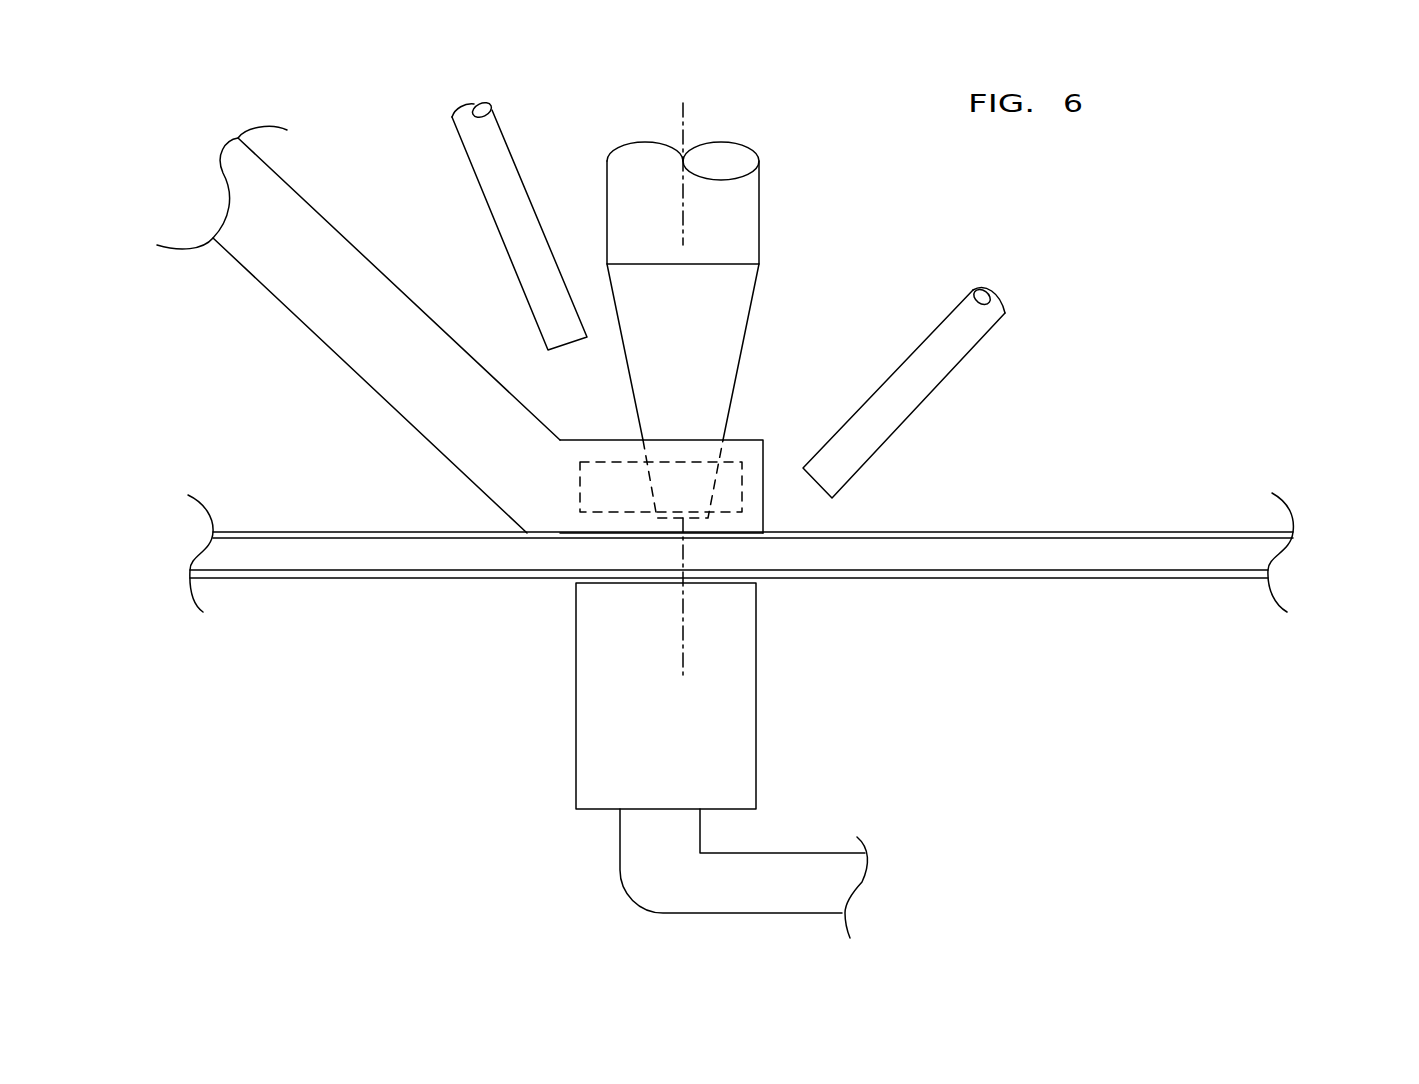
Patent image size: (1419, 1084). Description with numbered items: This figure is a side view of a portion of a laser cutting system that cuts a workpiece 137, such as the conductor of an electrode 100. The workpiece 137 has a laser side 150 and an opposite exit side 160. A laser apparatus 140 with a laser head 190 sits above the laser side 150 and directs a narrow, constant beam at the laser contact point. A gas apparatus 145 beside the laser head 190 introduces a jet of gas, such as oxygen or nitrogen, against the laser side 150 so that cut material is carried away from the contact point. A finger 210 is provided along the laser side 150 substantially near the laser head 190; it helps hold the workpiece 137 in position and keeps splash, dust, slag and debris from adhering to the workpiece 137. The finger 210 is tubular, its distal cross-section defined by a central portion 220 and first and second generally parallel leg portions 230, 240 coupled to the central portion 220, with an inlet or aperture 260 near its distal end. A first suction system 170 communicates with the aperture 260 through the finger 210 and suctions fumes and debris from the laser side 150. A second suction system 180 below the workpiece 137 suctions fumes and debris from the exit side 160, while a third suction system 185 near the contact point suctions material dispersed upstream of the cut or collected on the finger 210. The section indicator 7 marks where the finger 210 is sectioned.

The electrode 100 is at (1220, 475).
The workpiece 137 is at (1258, 558).
The laser apparatus 140 is at (785, 187).
The gas apparatus 145 is at (480, 188).
The laser side 150 is at (1022, 520).
The exit side 160 is at (977, 590).
The first suction system 170 is at (250, 315).
The second suction system 180 is at (783, 683).
The third suction system 185 is at (983, 370).
The laser head 190 is at (755, 298).
The finger 210 is at (368, 390).
The central portion 220 is at (755, 495).
The first leg portion 230 is at (746, 438).
The second leg portion 240 is at (730, 533).
The inlet or aperture 260 is at (580, 493).
The section line 7- 7 is at (618, 103).